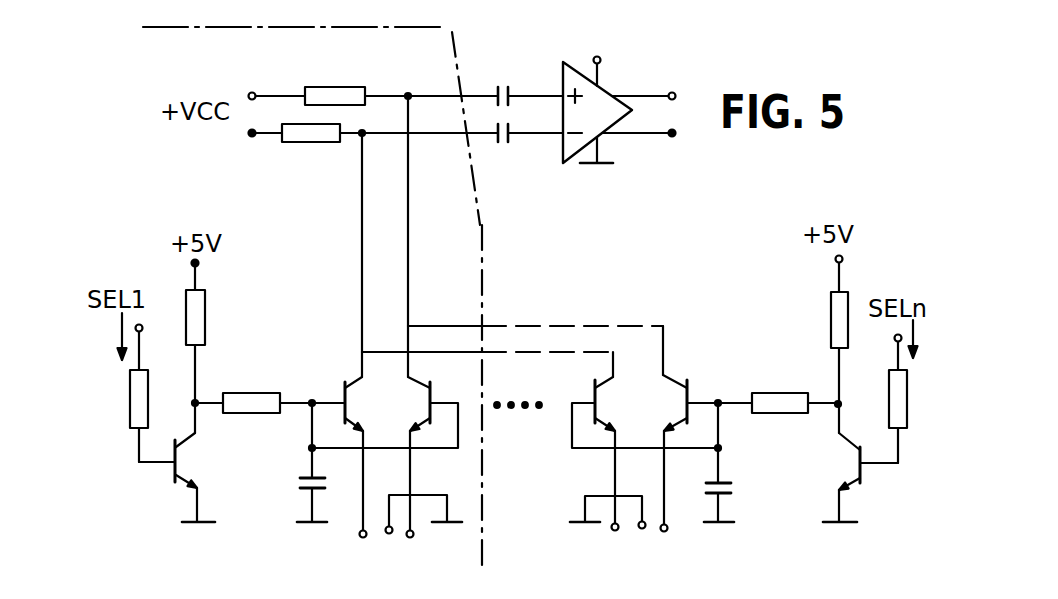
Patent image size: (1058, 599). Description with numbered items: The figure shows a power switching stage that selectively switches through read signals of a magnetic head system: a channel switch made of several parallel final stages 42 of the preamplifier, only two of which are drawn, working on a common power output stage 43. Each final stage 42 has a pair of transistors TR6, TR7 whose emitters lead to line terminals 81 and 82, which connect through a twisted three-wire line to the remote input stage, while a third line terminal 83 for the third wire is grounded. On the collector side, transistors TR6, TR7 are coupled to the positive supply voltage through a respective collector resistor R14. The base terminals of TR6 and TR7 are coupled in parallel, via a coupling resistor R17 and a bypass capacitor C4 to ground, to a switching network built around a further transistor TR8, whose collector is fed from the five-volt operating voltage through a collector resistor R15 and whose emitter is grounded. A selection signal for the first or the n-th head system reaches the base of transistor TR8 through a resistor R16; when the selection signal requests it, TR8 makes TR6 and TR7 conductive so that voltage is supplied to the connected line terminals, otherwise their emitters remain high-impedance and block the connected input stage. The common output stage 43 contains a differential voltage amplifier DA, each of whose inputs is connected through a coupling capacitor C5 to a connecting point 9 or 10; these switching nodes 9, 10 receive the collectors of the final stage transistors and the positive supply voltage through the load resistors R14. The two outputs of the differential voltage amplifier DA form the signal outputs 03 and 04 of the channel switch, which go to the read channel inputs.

The final stage 42 is at (183, 40).
The common power output stage 43 is at (533, 68).
The connecting point 9 is at (409, 95).
The connecting point 10 is at (361, 135).
The collector resistor R14 is at (322, 86).
The coupling capacitor C5 is at (498, 107).
The differential voltage amplifier DA is at (607, 140).
The signal output 03 is at (661, 98).
The signal output 04 is at (656, 136).
The collector resistor R15 is at (517, 319).
The resistor R16 is at (519, 398).
The coupling resistor R17 is at (516, 388).
The transistor TR6 is at (453, 441).
The transistor TR7 is at (569, 428).
The switching transistor TR8 is at (517, 477).
The bypass capacitor C4 is at (521, 463).
The line terminal 81 is at (361, 538).
The line terminal 82 is at (415, 536).
The line terminal 83 is at (389, 534).